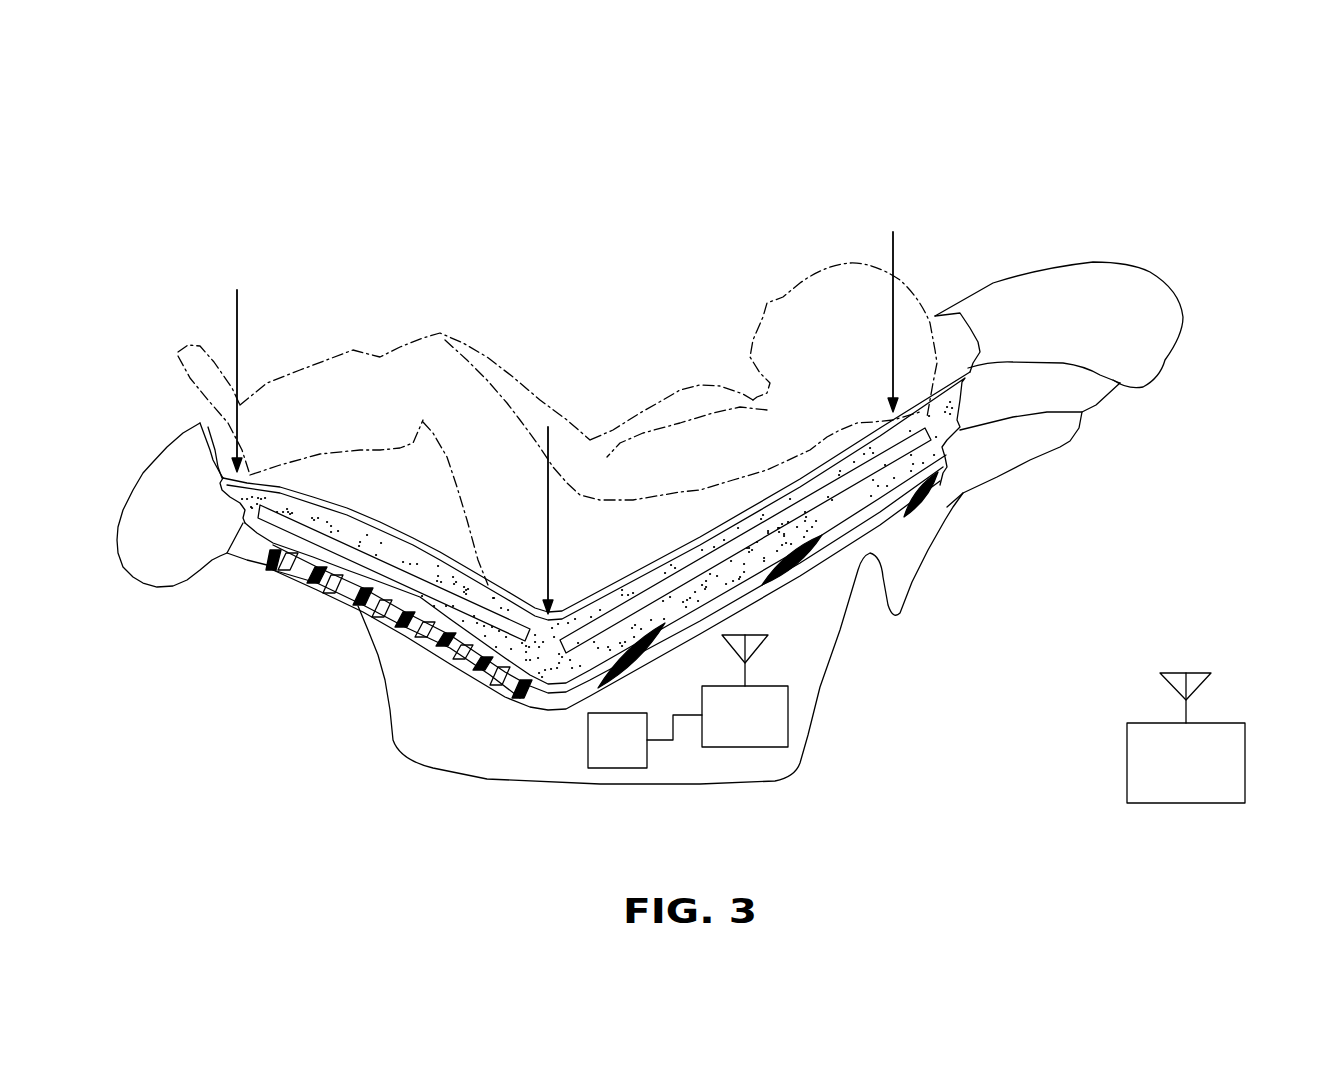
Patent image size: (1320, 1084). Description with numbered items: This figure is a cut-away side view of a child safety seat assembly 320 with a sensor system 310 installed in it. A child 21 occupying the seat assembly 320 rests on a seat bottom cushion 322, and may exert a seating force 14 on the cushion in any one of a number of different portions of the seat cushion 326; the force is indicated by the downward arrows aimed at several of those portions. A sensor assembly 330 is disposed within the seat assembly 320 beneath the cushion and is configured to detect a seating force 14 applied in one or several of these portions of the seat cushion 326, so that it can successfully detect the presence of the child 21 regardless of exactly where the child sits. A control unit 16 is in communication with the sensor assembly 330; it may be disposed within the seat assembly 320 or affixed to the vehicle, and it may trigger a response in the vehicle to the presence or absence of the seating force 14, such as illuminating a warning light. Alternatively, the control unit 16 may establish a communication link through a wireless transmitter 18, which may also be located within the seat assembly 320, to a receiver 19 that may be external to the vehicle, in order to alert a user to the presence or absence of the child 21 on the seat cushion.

The sensor system 310 is at (590, 270).
The child safety seat assembly 320 is at (1176, 252).
The seat bottom cushion 322 is at (532, 668).
The seat cushion portions 326 is at (240, 477).
The sensor assembly 330 is at (345, 556).
The seating force 14 is at (236, 333).
The child 21 is at (820, 270).
The control unit 16 is at (588, 746).
The wireless transmitter 18 is at (787, 715).
The receiver 19 is at (1246, 770).